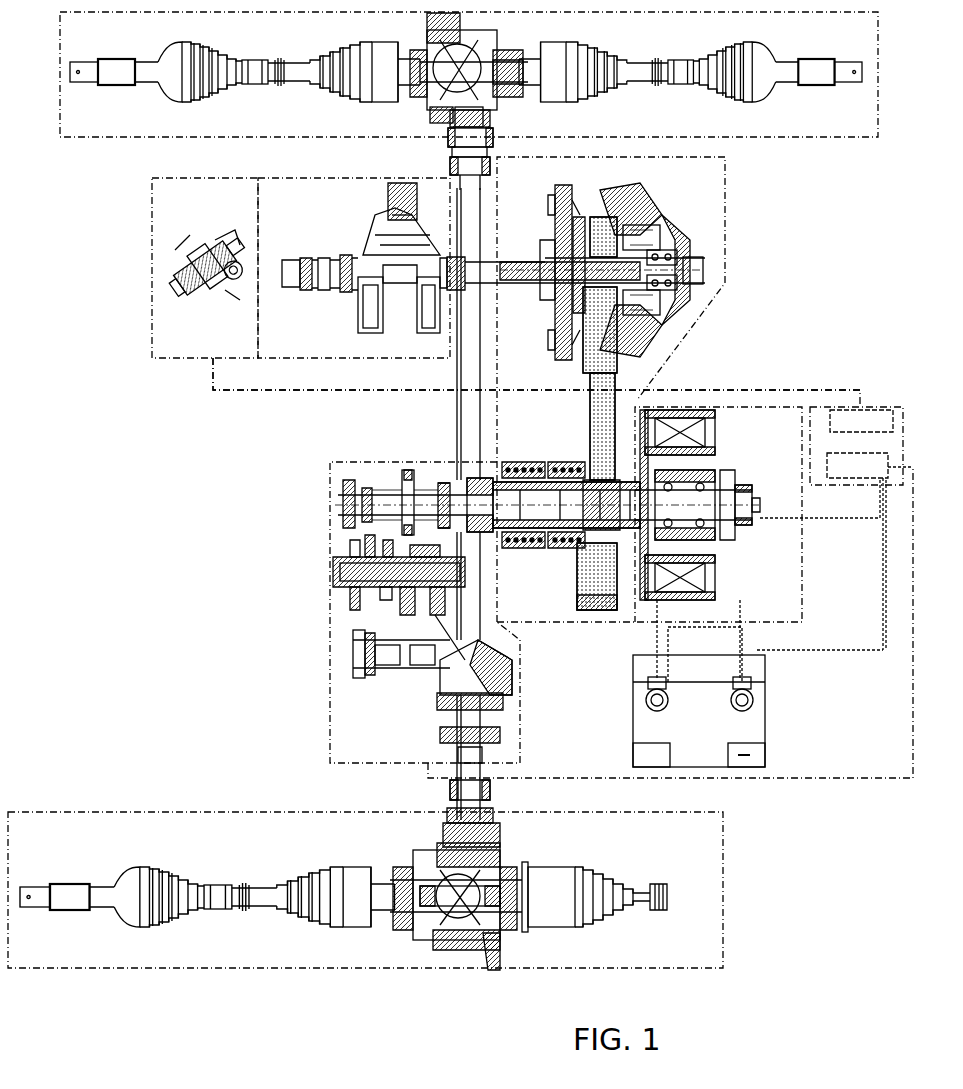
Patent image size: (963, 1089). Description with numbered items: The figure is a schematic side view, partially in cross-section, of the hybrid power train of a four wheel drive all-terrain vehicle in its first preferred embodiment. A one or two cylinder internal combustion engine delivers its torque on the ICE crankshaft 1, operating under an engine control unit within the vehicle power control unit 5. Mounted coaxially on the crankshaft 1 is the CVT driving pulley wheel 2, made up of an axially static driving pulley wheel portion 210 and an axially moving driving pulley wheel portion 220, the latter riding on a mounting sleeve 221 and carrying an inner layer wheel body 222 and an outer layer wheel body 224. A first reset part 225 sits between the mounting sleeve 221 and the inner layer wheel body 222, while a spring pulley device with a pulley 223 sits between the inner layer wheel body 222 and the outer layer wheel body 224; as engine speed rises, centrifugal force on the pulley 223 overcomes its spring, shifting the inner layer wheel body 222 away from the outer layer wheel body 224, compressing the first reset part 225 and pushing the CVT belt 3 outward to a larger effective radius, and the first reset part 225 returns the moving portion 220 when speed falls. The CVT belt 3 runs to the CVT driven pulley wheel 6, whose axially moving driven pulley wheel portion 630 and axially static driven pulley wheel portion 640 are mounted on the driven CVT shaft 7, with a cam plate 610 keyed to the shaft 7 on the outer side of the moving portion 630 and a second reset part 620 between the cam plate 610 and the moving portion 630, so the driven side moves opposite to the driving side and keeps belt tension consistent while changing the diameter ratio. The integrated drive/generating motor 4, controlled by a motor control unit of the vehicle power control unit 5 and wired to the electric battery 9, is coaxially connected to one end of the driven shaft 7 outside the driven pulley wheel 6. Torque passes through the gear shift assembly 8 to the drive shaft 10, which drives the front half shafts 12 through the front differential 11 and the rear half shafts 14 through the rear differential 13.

The ICE crankshaft 1 is at (380, 235).
The CVT driving pulley wheel 2 is at (546, 221).
The CVT belt 3 is at (612, 385).
The integrated drive/generating motor 4 is at (680, 440).
The vehicle power control unit 5 is at (866, 446).
The CVT driven pulley wheel 6 is at (628, 408).
The driven CVT shaft 7 is at (490, 495).
The gear shift assembly 8 is at (370, 587).
The electric battery 9 is at (735, 725).
The drive shaft 10 is at (458, 390).
The front differential 11 is at (462, 40).
The front half shafts 12 is at (372, 52).
The rear differential 13 is at (497, 846).
The rear half shafts 14 is at (227, 887).
The axially static driving pulley wheel portion 210 is at (566, 190).
The axially moving driving pulley wheel portion 220 is at (755, 153).
The mounting sleeve 221 is at (610, 250).
The inner layer wheel body 222 is at (638, 217).
The pulley 223 is at (658, 240).
The outer layer wheel body 224 is at (672, 242).
The first reset part 225 is at (675, 250).
The cam plate 610 is at (500, 477).
The second reset part 620 is at (537, 462).
The axially moving driven pulley wheel portion 630 is at (577, 460).
The axially static driven pulley wheel portion 640 is at (597, 475).